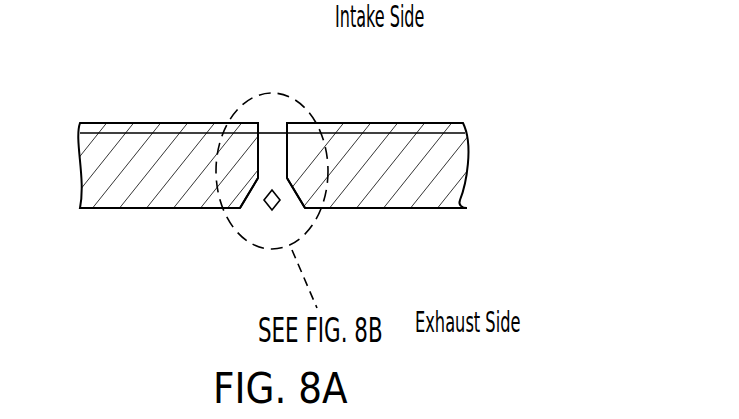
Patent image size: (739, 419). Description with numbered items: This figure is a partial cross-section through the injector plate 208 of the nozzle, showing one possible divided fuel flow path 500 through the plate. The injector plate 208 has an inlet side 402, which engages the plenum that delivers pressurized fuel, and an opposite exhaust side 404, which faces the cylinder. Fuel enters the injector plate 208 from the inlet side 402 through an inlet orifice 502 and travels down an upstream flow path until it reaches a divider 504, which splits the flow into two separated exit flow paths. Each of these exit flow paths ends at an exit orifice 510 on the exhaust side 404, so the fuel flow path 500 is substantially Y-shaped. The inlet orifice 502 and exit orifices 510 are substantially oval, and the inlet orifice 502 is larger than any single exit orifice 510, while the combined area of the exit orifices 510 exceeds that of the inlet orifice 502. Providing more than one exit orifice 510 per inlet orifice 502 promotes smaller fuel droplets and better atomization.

The injector plate 208 is at (130, 124).
The inlet side 402 is at (187, 123).
The exhaust side 404 is at (150, 208).
The fuel flow path 500 is at (291, 107).
The inlet orifice 502 is at (273, 125).
The divider 504 is at (272, 211).
The exit orifice 510 is at (250, 208).